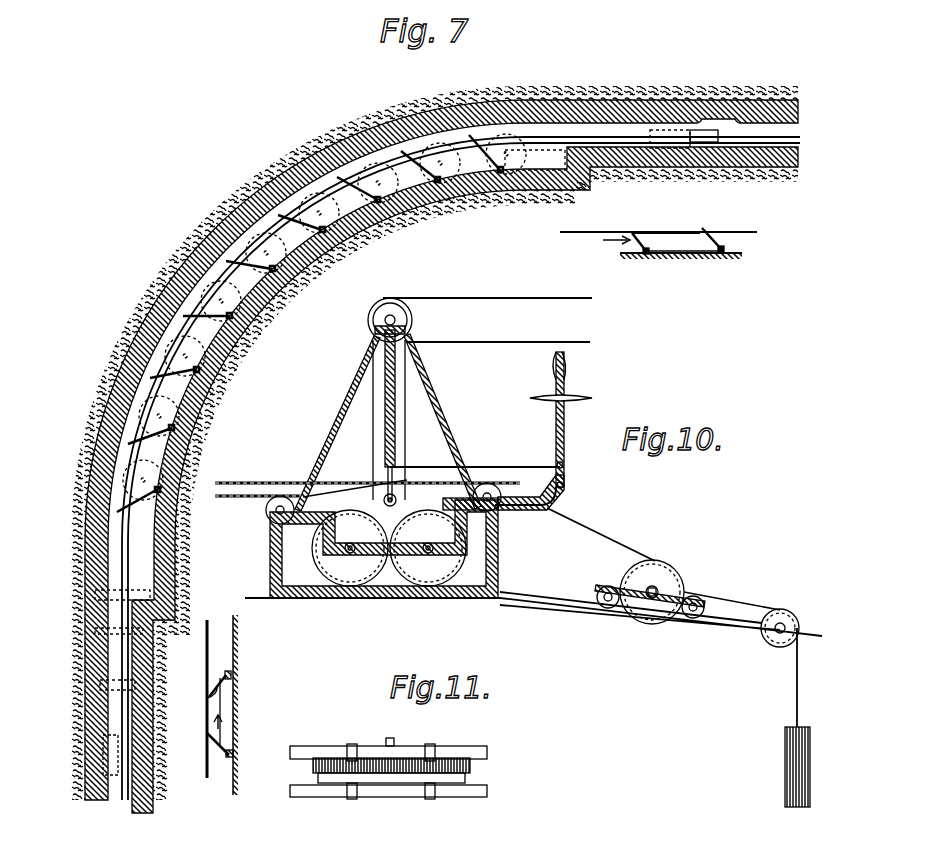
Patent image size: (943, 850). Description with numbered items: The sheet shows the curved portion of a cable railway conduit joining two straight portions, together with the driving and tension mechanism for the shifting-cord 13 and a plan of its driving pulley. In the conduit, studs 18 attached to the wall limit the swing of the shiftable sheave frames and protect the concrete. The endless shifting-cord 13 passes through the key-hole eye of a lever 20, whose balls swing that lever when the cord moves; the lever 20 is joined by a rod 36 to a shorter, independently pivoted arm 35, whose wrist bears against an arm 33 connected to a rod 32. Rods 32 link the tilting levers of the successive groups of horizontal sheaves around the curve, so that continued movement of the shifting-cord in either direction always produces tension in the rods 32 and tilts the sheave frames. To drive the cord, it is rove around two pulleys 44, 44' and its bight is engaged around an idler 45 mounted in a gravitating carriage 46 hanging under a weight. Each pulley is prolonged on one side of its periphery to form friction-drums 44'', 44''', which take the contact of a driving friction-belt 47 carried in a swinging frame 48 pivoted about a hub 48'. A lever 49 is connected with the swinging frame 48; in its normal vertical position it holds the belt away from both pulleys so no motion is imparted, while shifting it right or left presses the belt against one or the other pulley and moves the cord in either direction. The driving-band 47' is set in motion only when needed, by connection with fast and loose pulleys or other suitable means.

In FIG. 7, the rod 32 is at (550, 100).
In FIG. 7, the stud 18 is at (734, 132).
In FIG. 7, the shifting-cord 13 is at (430, 501).
In FIG. 10, the shifting-cord 13 is at (678, 657).
In FIG. 7, the arm 33 is at (442, 463).
In FIG. 7, the arm 35 is at (429, 465).
In FIG. 7, the rod 36 is at (478, 489).
In FIG. 7, the lever 20 is at (480, 511).
In FIG. 10, the driving-band 47' is at (480, 311).
In FIG. 10, the swinging frame 48 is at (454, 398).
In FIG. 10, the driving friction-belt 47 is at (388, 422).
In FIG. 10, the pivot 48' is at (441, 488).
In FIG. 10, the pulley 44' is at (350, 548).
In FIG. 11, the pulley 44' is at (341, 765).
In FIG. 10, the pulley 44 is at (518, 558).
In FIG. 11, the pulley 44 is at (388, 768).
In FIG. 11, the friction-drum 44'' is at (488, 763).
In FIG. 11, the friction-drum 44''' is at (294, 765).
In FIG. 10, the lever 49 is at (543, 431).
In FIG. 10, the idler 45 is at (650, 592).
In FIG. 10, the gravitating carriage 46 is at (658, 600).